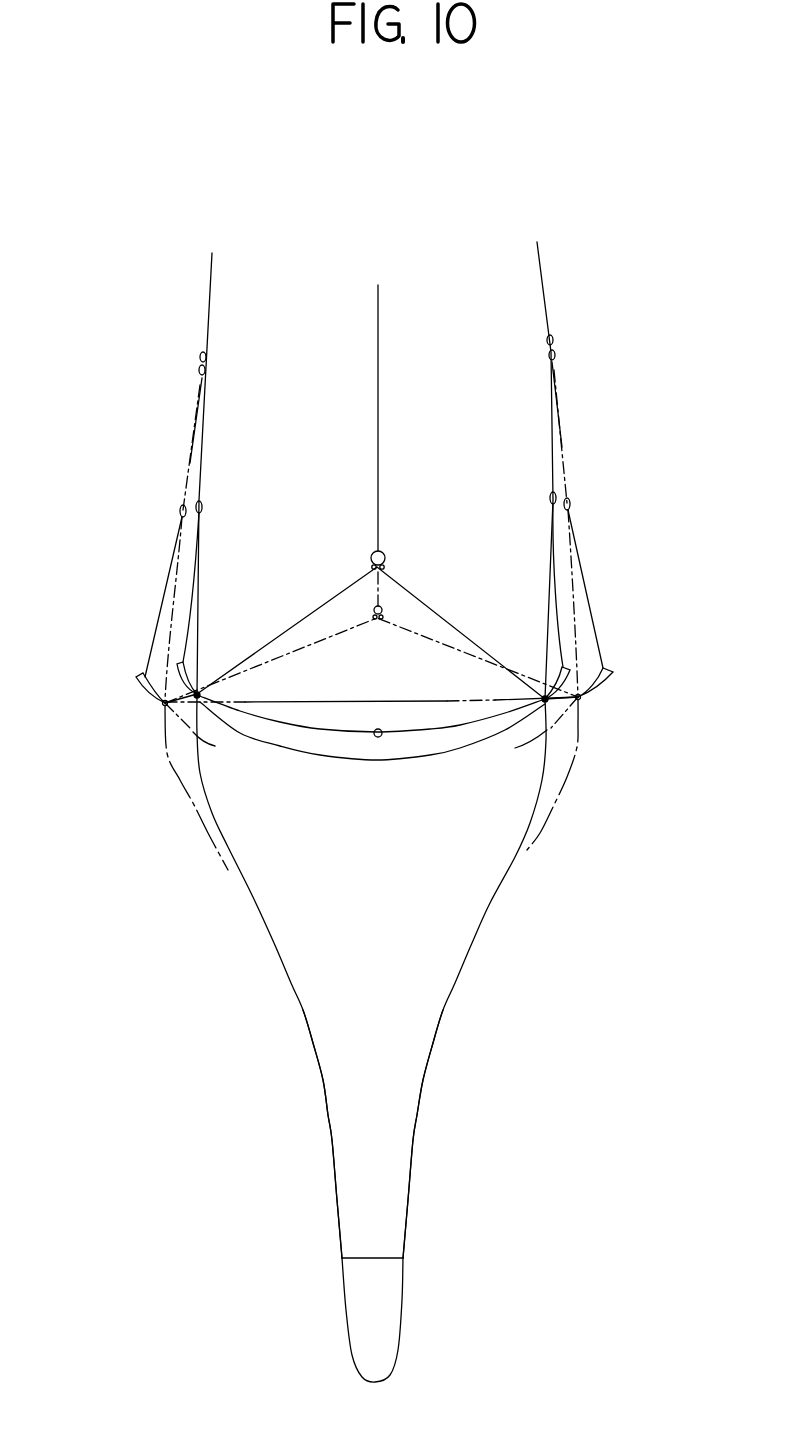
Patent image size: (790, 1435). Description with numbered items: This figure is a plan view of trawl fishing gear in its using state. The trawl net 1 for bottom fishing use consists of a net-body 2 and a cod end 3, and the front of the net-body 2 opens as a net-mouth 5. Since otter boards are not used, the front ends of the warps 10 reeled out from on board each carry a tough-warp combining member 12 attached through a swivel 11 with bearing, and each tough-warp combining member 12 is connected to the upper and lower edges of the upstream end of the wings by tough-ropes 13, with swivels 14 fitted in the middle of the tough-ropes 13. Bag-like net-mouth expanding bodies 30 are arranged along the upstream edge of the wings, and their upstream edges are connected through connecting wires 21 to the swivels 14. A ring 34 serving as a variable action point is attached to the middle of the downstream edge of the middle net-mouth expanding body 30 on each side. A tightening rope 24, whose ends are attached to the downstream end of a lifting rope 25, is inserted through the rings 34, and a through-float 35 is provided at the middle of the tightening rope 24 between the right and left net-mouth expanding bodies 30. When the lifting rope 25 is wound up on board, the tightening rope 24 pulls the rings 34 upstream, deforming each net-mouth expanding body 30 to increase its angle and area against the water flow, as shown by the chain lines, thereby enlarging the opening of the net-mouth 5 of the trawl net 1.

The trawl net 1 is at (524, 1015).
The net-body 2 is at (415, 1073).
The cod end 3 is at (397, 1312).
The net-mouth 5 is at (345, 754).
The warps 10 is at (207, 282).
The swivels with bearing 11 is at (620, 330).
The tough-warp combining member 12 is at (199, 370).
The tough-rope 13 is at (200, 452).
The swivels 14 is at (196, 506).
The connecting wires 21 is at (188, 595).
The tightening rope 24 is at (453, 618).
The lifting rope 25 is at (379, 436).
The net-mouth expanding body 30 is at (165, 703).
The ring 34 is at (197, 694).
The through-float 35 is at (382, 735).